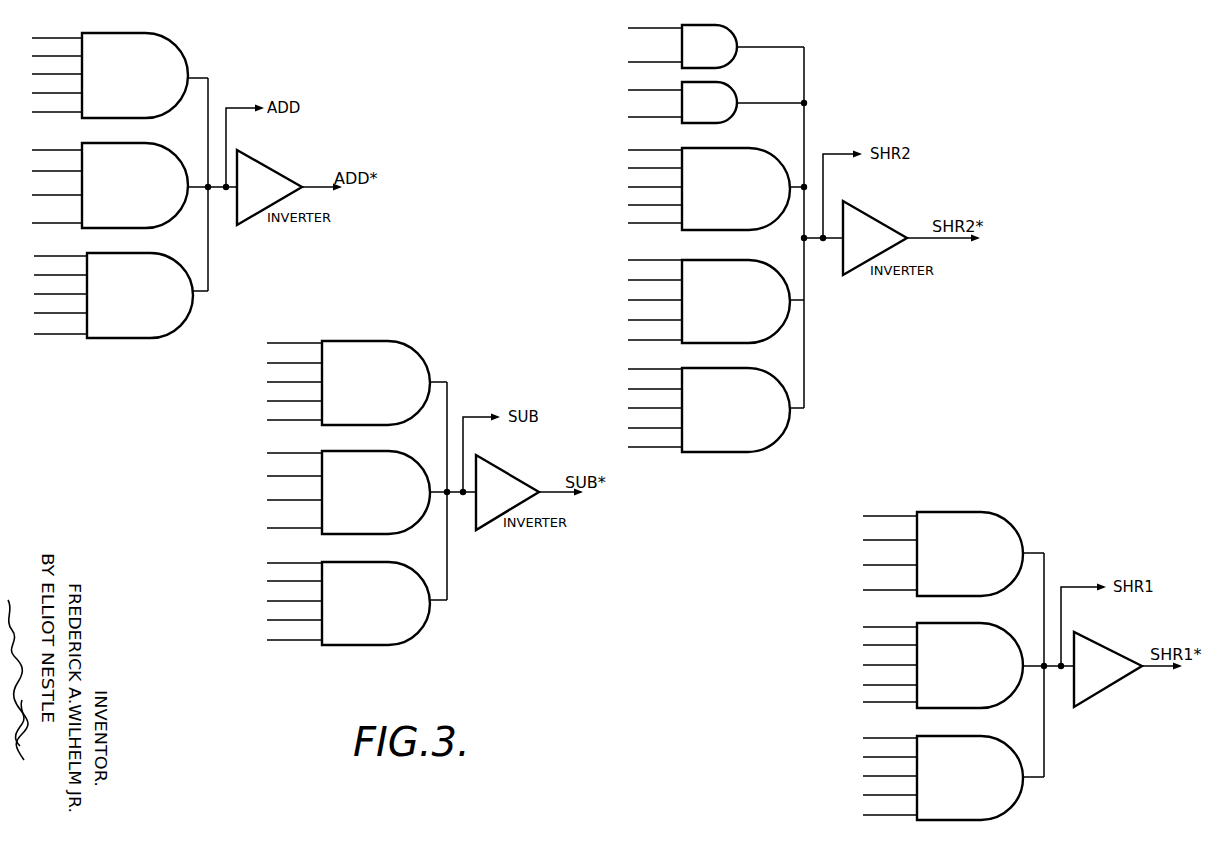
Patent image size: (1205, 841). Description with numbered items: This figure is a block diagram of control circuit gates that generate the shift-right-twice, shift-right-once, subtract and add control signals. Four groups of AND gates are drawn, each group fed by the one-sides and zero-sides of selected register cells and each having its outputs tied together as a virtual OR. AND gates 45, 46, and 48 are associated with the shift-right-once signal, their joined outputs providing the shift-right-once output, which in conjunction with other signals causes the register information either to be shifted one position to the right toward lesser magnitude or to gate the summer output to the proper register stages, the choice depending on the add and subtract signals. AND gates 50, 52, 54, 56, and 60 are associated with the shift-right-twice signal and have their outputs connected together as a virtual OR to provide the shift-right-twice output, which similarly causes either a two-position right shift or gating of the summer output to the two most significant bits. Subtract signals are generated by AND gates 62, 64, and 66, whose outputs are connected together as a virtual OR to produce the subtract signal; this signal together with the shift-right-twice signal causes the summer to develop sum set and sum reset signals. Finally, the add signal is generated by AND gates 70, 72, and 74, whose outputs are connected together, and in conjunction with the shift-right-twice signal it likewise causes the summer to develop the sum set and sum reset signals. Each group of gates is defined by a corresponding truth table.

The AND gate 45 is at (1013, 522).
The AND gate 46 is at (1013, 633).
The AND gate 48 is at (1013, 746).
The AND gate 50 is at (730, 28).
The AND gate 52 is at (730, 85).
The AND gate 54 is at (780, 158).
The AND gate 56 is at (780, 270).
The AND gate 60 is at (780, 378).
The AND gate 62 is at (420, 350).
The AND gate 64 is at (420, 460).
The AND gate 66 is at (420, 571).
The AND gate 70 is at (180, 42).
The AND gate 72 is at (180, 152).
The AND gate 74 is at (184, 262).